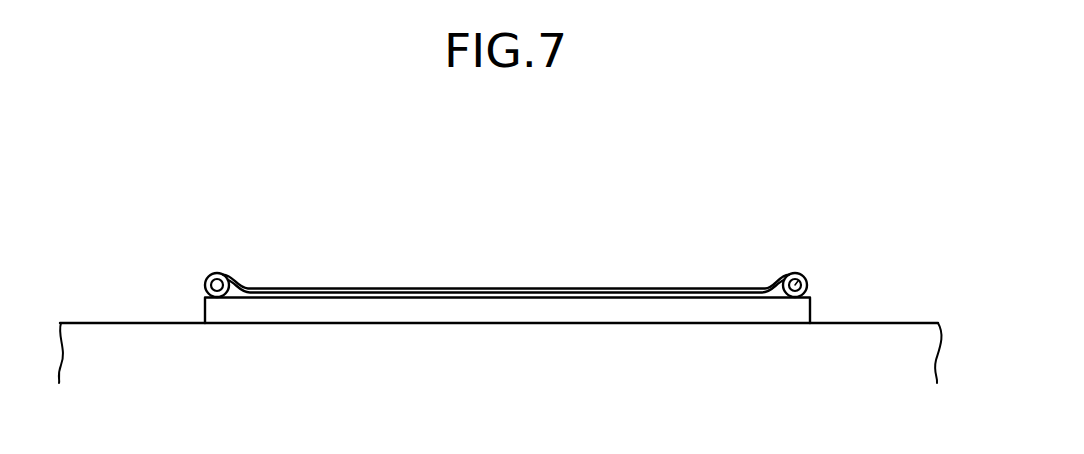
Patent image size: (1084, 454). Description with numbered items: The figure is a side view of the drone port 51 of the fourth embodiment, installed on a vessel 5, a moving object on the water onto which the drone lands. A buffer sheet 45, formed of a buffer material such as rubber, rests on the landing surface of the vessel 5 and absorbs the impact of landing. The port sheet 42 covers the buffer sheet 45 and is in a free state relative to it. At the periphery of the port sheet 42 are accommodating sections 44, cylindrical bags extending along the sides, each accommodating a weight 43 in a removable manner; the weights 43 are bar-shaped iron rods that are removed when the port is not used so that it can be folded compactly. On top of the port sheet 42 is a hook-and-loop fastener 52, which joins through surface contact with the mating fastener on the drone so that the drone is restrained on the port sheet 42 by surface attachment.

The vessel 5 is at (117, 322).
The port sheet 42 is at (374, 293).
The weights 43 is at (790, 272).
The accommodating sections 44 is at (808, 283).
The buffer sheet 45 is at (810, 313).
The drone port 51 is at (547, 224).
The hook-and-loop fastener 52 is at (468, 289).